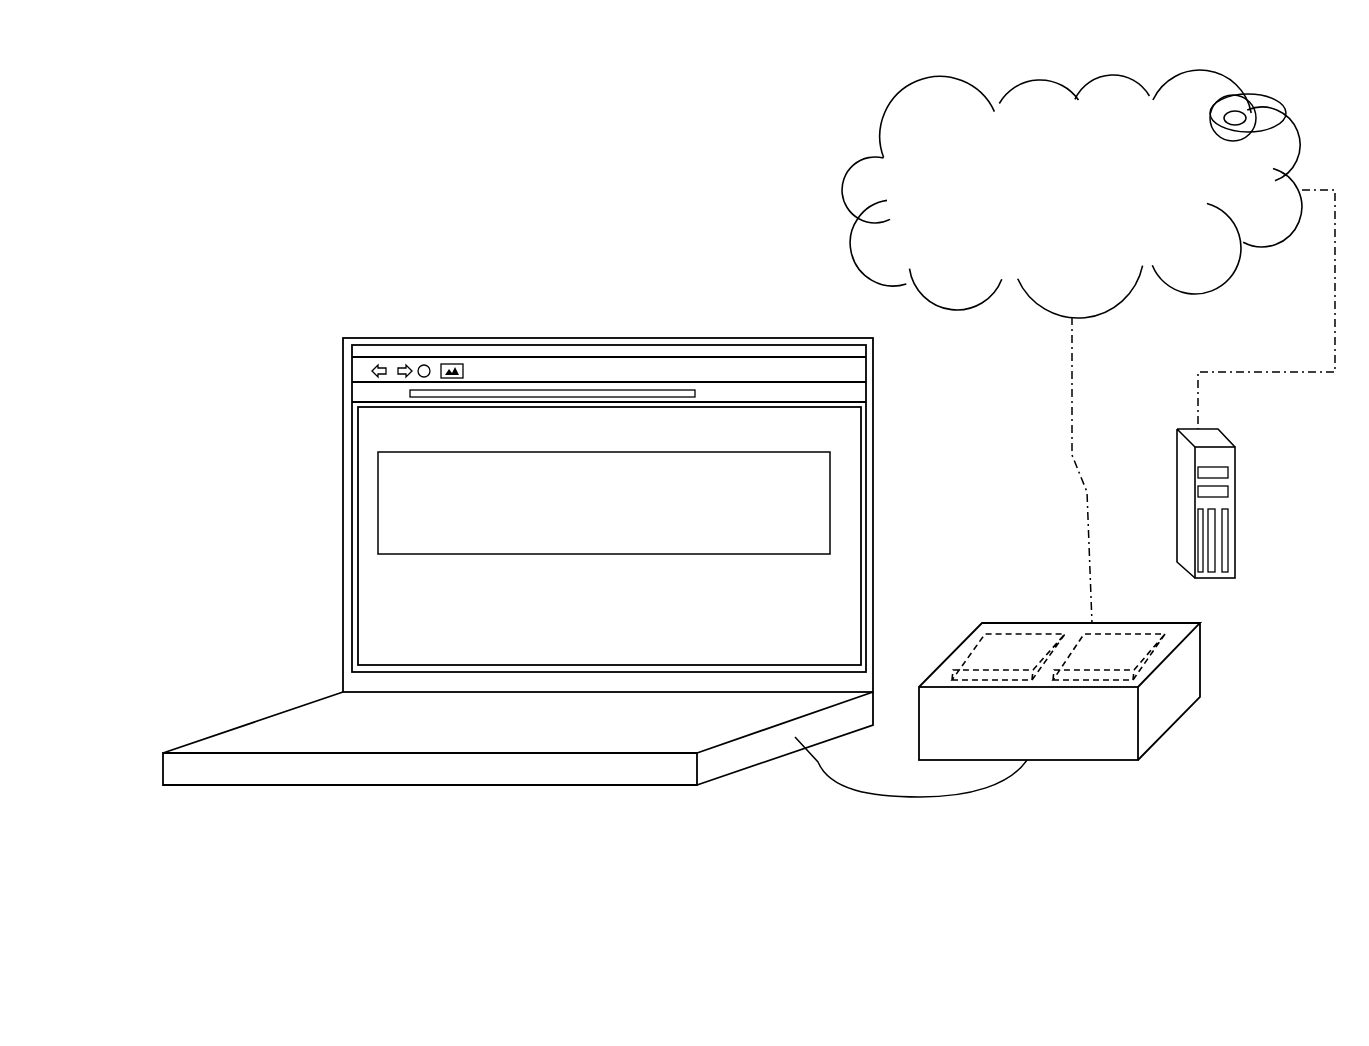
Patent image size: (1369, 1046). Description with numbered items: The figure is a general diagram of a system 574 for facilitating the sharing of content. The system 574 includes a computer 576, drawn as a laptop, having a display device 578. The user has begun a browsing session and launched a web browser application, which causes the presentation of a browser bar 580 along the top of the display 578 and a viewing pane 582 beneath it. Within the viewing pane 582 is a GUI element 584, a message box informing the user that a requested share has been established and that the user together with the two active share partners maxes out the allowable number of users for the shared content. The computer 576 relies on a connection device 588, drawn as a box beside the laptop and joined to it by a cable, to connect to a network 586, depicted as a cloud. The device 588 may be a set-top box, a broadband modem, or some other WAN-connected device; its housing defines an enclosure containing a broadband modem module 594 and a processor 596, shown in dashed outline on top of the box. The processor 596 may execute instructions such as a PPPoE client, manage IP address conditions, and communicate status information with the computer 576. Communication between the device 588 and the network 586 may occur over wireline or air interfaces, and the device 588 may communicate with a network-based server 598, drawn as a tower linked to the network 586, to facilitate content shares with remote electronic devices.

The system 574 is at (415, 178).
The computer 576 is at (257, 528).
The display device 578 is at (324, 372).
The browser bar 580 is at (873, 345).
The viewing pane 582 is at (873, 407).
The GUI element 584 is at (502, 563).
The network 586 is at (1072, 194).
The connection device 588 is at (1201, 737).
The broadband modem module 594 is at (1008, 657).
The processor 596 is at (1109, 657).
The server 598 is at (1166, 448).